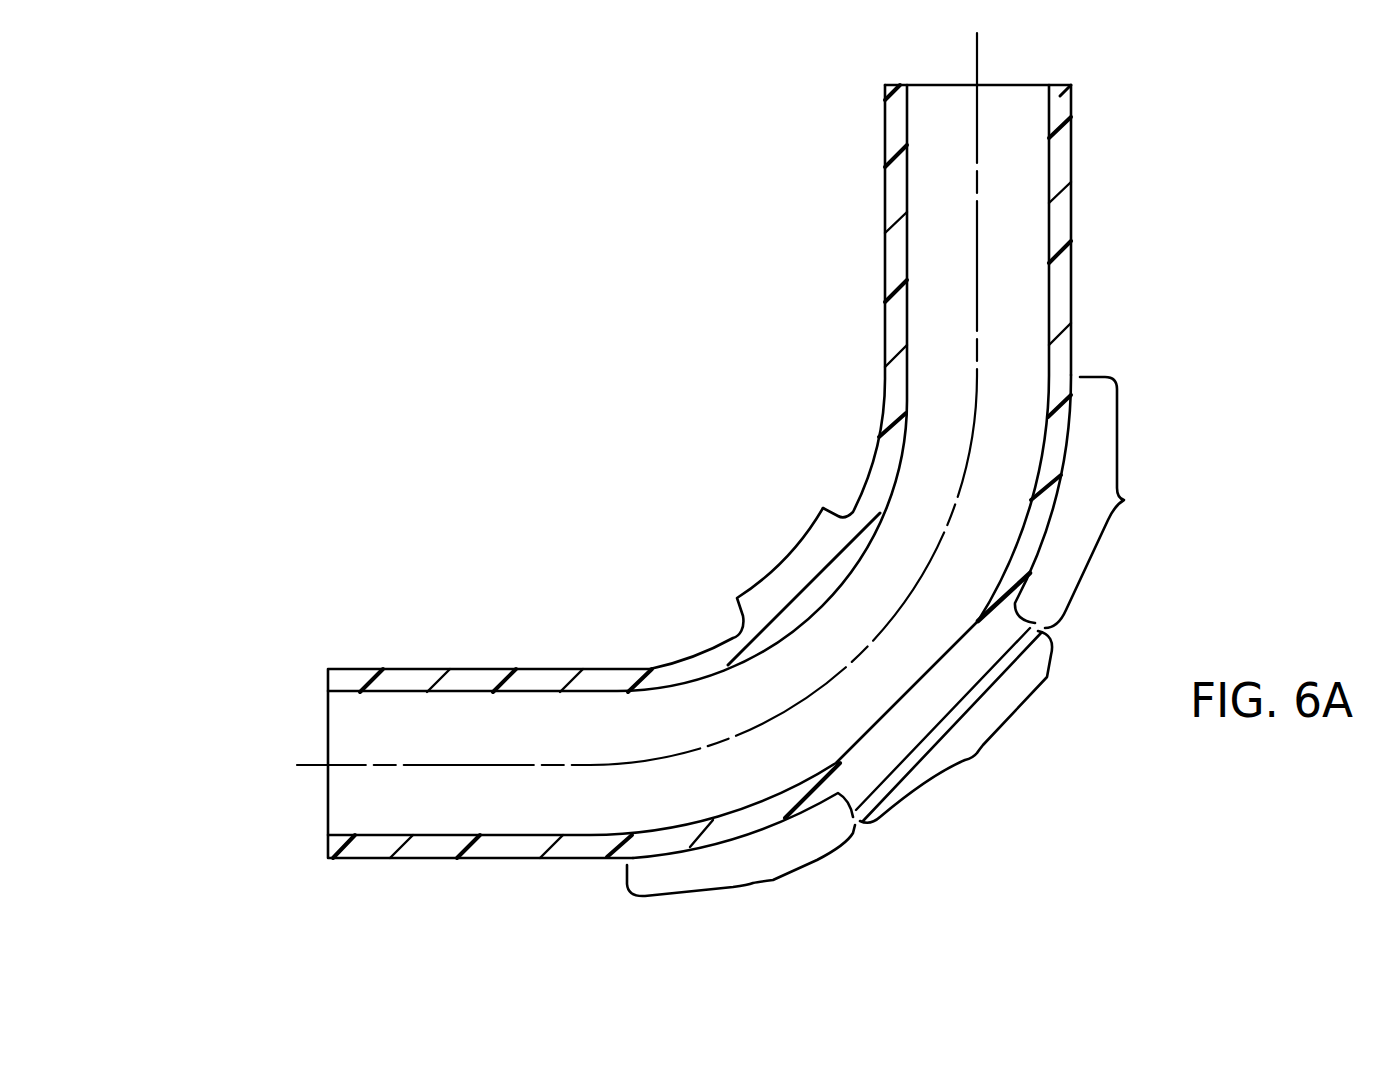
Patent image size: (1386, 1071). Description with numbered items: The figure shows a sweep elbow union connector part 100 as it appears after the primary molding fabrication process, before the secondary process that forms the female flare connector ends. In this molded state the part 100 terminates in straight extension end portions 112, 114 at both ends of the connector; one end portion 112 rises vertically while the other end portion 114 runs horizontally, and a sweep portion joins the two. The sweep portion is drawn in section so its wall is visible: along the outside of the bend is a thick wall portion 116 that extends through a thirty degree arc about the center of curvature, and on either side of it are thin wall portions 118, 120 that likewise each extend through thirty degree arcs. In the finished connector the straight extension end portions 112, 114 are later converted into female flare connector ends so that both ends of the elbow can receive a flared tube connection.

The elbow fitting 100 is at (642, 265).
The straight extension end portion 112 is at (885, 173).
The straight extension end portion 114 is at (487, 669).
The thick wall portion 116 is at (977, 753).
The thin wall portion 118 is at (753, 883).
The thin wall portion 120 is at (1124, 500).